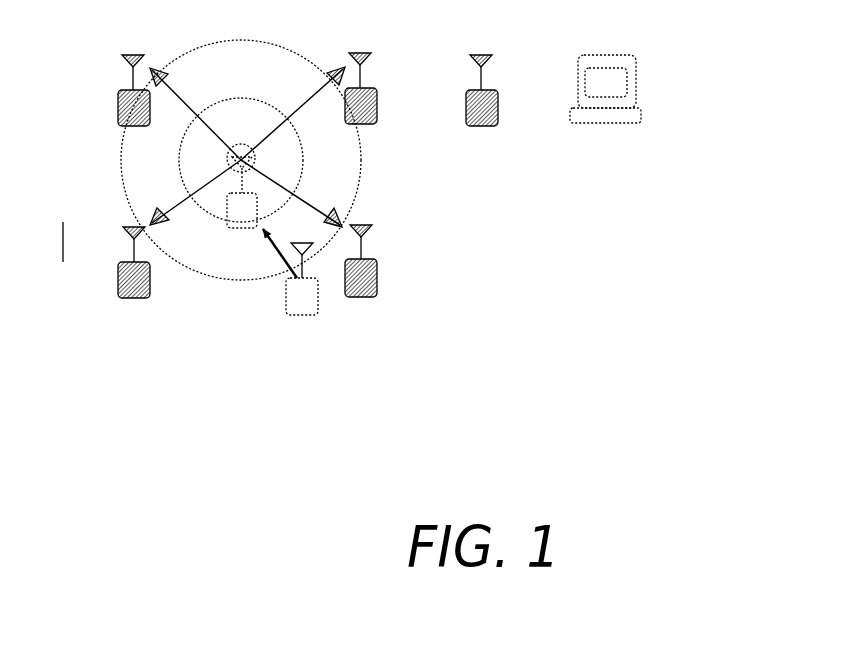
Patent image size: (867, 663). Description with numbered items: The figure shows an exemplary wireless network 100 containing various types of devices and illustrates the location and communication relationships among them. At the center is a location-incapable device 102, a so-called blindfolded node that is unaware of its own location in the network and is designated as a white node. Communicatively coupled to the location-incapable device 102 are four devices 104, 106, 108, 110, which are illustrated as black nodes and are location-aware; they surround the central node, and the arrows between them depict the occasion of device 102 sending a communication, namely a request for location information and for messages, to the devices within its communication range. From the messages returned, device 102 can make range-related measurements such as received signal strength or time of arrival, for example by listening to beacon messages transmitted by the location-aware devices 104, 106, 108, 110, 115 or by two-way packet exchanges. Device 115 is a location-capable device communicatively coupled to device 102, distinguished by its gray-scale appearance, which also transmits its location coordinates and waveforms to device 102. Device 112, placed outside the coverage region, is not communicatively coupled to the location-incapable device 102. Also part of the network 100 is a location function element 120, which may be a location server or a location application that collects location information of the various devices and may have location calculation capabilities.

The network 100 is at (737, 36).
The location-incapable device 102 is at (242, 223).
The location-aware device 104 is at (115, 120).
The location-aware device 106 is at (133, 303).
The location-aware device 108 is at (380, 120).
The location-aware device 110 is at (382, 282).
The device 112 is at (482, 126).
The location-capable device 115 is at (304, 343).
The location function element 120 is at (613, 123).